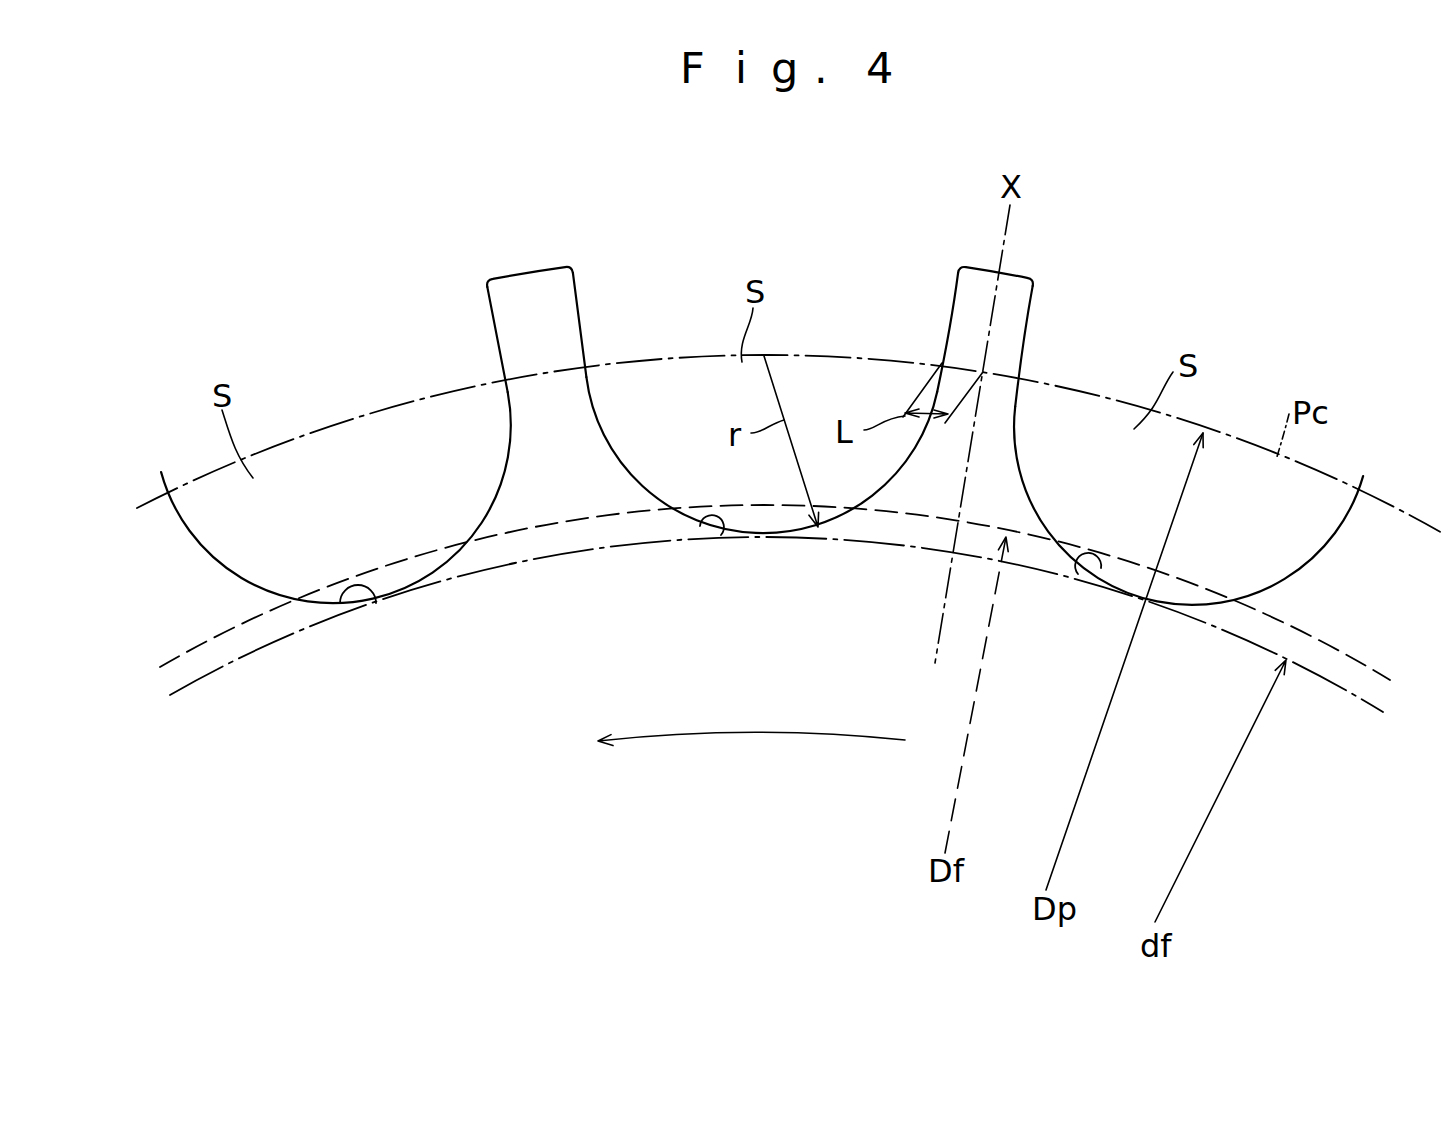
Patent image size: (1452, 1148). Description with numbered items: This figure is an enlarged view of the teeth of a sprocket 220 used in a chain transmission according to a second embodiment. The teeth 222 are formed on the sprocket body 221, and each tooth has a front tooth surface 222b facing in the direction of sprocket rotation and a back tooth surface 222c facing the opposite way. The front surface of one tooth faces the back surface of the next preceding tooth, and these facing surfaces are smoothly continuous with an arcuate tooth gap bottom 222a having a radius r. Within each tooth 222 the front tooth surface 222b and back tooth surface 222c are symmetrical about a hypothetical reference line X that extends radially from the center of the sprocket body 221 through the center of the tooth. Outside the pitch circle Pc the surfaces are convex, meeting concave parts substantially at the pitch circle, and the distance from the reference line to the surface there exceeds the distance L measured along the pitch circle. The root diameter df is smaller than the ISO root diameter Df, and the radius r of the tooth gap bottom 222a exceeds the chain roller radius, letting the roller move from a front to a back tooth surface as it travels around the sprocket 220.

The sprocket 220 is at (788, 462).
The sprocket body 221 is at (473, 799).
The sprocket tooth 222 is at (754, 301).
The tooth gap bottom 222a is at (376, 603).
The front tooth surface 222b is at (490, 328).
The back tooth surface 222c is at (580, 303).